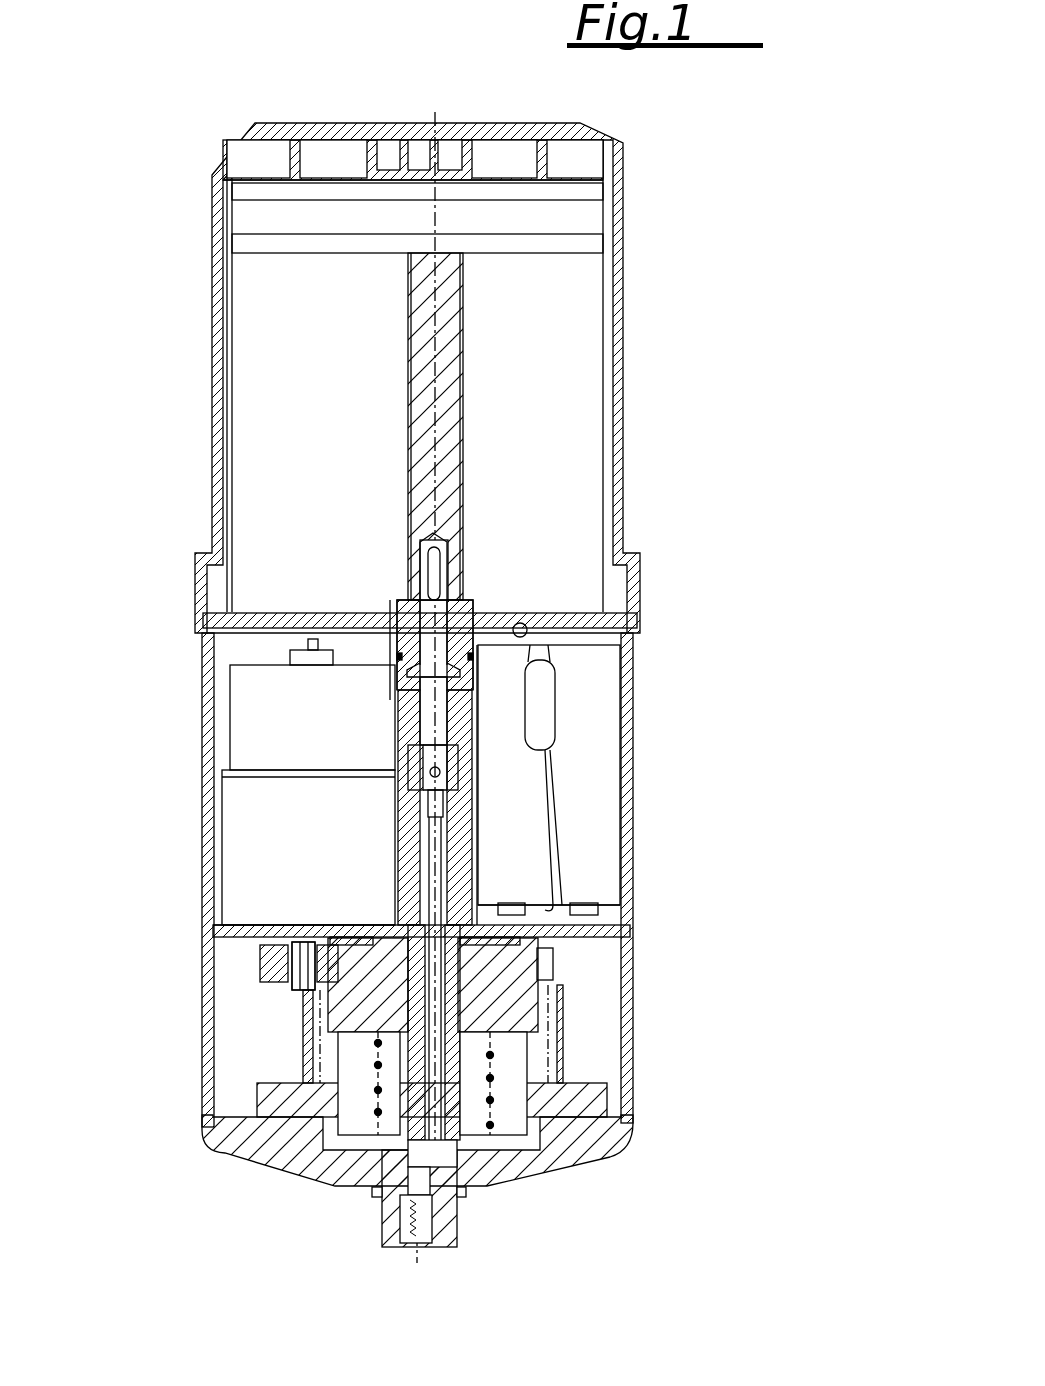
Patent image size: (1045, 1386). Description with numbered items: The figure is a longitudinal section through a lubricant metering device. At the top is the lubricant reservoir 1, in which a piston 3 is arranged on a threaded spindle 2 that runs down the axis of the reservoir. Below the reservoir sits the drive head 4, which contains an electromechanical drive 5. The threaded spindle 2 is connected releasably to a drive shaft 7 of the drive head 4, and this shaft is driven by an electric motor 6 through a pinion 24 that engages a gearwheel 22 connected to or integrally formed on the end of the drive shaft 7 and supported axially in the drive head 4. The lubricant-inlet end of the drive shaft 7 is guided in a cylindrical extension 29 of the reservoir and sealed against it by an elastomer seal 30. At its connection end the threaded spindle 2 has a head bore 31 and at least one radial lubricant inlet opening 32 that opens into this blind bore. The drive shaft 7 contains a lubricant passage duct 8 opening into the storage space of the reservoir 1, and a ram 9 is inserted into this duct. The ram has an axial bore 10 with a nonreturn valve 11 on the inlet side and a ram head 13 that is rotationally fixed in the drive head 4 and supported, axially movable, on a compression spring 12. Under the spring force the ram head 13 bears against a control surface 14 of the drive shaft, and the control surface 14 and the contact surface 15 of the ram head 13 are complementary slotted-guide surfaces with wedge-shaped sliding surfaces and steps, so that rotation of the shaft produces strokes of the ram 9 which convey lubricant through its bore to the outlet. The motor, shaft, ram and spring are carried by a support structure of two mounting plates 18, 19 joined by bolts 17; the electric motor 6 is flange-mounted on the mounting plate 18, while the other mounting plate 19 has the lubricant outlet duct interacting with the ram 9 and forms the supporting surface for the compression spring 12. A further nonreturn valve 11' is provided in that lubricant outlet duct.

The lubricant reservoir 1 is at (617, 280).
The threaded spindle 2 is at (425, 332).
The piston 3 is at (588, 217).
The drive head 4 is at (202, 682).
The electromechanical drive 5 is at (232, 948).
The electric motor 6 is at (238, 807).
The drive shaft 7 is at (400, 893).
The lubricant passage duct 8 is at (452, 700).
The ram 9 is at (460, 855).
The axial bore 10 is at (440, 830).
The nonreturn valve 11 is at (585, 725).
The further nonreturn valve 11' is at (358, 1215).
The compression spring 12 is at (548, 1160).
The ram head 13 is at (470, 1020).
The control surface 14 is at (305, 1010).
The contact surface 15 is at (303, 966).
The bolts 17 is at (550, 1057).
The mounting plate 18 is at (600, 918).
The mounting plate 19 is at (597, 1102).
The gearwheel 22 is at (520, 965).
The pinion 24 is at (267, 937).
The cylindrical extension 29 is at (398, 620).
The elastomer seal 30 is at (392, 690).
The head bore 31 is at (455, 600).
The radial lubricant inlet opening 32 is at (445, 545).